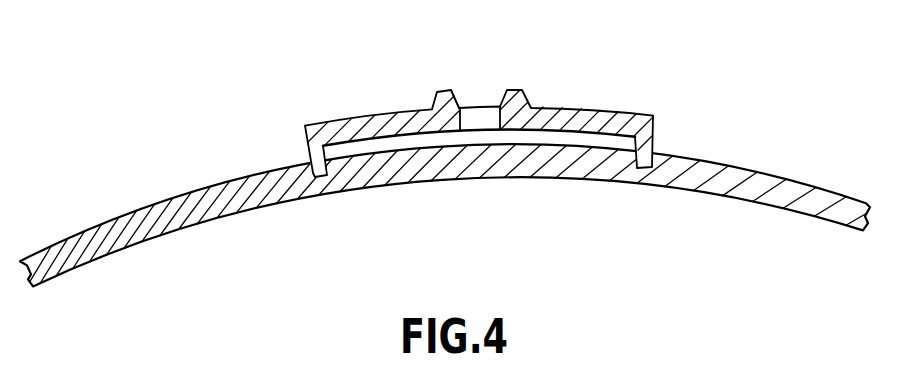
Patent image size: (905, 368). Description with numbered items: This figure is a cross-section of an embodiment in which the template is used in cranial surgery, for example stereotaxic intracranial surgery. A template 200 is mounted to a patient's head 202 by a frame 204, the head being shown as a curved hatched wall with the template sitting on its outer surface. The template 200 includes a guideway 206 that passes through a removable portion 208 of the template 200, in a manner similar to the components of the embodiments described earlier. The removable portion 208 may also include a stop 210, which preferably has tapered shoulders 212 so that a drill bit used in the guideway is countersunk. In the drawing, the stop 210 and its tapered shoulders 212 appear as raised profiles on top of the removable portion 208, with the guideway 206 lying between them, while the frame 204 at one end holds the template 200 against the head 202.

The template 200 is at (468, 98).
The patient's head 202 is at (742, 167).
The frame 204 is at (655, 113).
The guideway 206 is at (487, 104).
The removable portion 208 is at (533, 105).
The stop 210 is at (449, 93).
The tapered shoulders 212 is at (456, 95).